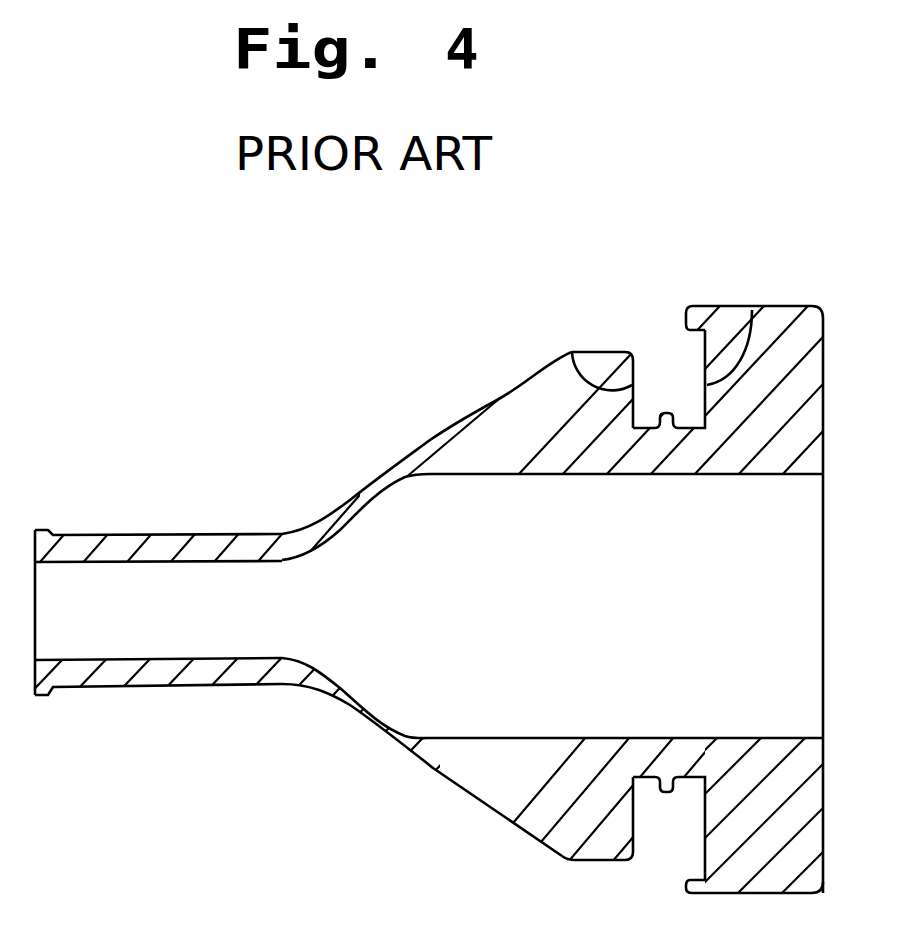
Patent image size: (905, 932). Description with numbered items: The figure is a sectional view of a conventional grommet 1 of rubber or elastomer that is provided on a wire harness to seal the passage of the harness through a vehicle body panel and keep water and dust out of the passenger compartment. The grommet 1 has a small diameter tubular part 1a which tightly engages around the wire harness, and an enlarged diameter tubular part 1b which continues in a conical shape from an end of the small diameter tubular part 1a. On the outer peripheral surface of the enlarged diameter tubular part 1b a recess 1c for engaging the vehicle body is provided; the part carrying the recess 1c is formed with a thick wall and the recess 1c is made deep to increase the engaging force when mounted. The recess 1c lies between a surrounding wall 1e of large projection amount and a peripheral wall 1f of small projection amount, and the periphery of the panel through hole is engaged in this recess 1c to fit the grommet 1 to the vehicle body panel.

The grommet 1 is at (337, 449).
The small diameter tubular part 1a is at (165, 534).
The enlarged diameter tubular part 1b is at (343, 712).
The recess 1c is at (666, 386).
The surrounding wall 1e is at (752, 306).
The peripheral wall 1f is at (572, 350).